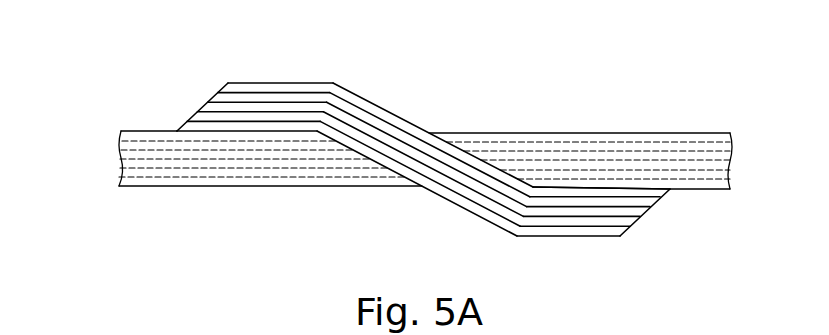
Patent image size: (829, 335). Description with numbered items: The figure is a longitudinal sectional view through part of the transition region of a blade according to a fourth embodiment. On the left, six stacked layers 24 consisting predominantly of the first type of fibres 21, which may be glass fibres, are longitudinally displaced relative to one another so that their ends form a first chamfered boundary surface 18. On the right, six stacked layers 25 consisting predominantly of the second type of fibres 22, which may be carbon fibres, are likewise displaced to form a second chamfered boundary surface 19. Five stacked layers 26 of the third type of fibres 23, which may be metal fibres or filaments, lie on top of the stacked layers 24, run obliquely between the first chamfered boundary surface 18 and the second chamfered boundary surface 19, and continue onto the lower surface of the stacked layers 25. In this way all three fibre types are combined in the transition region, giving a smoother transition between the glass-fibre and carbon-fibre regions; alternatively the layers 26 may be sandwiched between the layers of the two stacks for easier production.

The first chamfered boundary surface 18 is at (423, 149).
The second chamfered boundary surface 19 is at (477, 160).
The first type of fibres 21 is at (232, 193).
The second type of fibres 22 is at (580, 124).
The third type of fibres 23 is at (377, 131).
The stacked layers of the first type of fibres 24 is at (281, 165).
The stacked layers of the second type of fibres 25 is at (533, 150).
The stacked layers of the third type of fibres 26 is at (252, 107).